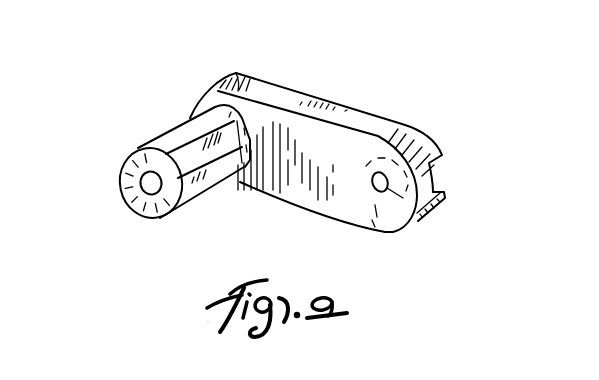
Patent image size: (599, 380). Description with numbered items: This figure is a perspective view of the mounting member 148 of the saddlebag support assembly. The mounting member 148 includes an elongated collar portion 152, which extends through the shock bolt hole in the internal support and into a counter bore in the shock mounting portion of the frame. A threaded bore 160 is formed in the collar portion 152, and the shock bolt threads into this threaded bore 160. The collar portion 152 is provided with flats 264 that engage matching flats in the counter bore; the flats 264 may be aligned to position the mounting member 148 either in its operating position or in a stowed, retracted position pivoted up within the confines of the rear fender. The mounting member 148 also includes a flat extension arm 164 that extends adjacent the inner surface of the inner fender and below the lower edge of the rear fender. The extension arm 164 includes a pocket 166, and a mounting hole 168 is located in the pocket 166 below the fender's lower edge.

The mounting member 148 is at (360, 52).
The collar portion 152 is at (170, 128).
The threaded bore 160 is at (150, 183).
The extension arm 164 is at (373, 118).
The pocket 166 is at (438, 178).
The mounting hole 168 is at (374, 191).
The flats 264 is at (232, 168).